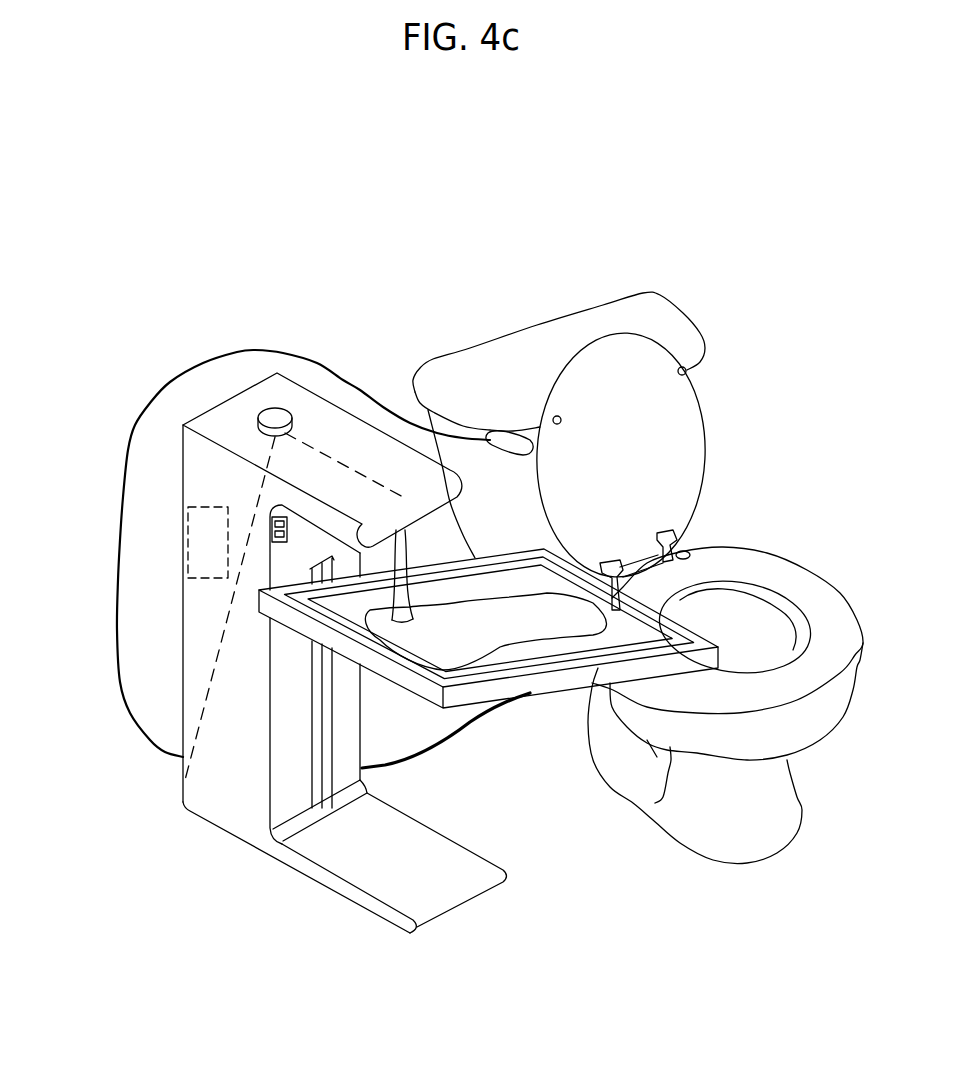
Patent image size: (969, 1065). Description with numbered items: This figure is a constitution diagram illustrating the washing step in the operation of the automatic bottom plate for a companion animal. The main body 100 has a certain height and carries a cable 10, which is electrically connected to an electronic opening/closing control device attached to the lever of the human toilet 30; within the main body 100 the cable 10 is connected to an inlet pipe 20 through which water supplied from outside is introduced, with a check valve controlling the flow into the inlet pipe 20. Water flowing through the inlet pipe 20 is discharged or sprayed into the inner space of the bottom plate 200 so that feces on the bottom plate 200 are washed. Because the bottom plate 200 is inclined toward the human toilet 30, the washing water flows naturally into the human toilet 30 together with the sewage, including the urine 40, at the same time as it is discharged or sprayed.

The cable 10 is at (118, 645).
The inlet pipe 20 is at (427, 758).
The human toilet 30 is at (853, 680).
The urine 40 is at (490, 627).
The main body 100 is at (190, 571).
The bottom plate 200 is at (558, 680).